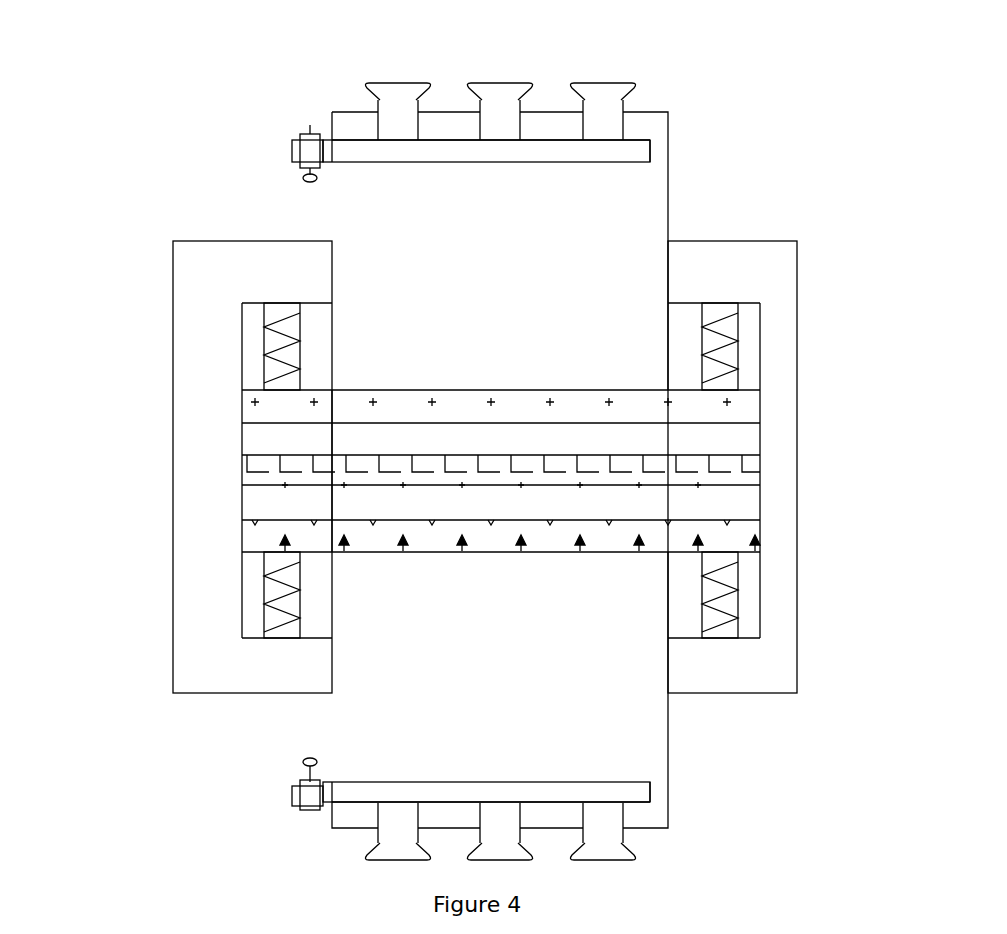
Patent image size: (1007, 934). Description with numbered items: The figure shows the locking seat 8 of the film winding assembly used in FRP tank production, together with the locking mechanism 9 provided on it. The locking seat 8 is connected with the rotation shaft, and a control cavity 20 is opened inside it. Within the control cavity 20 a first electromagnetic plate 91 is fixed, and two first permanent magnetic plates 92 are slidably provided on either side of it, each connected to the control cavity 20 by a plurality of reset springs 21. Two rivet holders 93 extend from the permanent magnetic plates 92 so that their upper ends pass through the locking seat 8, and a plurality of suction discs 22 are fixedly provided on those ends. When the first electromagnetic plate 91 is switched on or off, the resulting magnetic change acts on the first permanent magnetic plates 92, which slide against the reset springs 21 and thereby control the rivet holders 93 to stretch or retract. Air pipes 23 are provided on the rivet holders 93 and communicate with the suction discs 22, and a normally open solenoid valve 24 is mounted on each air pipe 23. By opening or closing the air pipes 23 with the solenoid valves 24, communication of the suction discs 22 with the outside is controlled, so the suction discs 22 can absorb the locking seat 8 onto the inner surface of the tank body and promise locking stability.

The locking seat 8 is at (802, 329).
The locking mechanism 9 is at (682, 180).
The control cavity 20 is at (760, 597).
The reset spring 21 is at (250, 597).
The suction disc 22 is at (610, 70).
The air pipe 23 is at (524, 172).
The solenoid valve 24 is at (309, 118).
The first electromagnetic plate 91 is at (737, 470).
The first permanent magnetic plate 92 is at (267, 407).
The rivet holder 93 is at (683, 761).